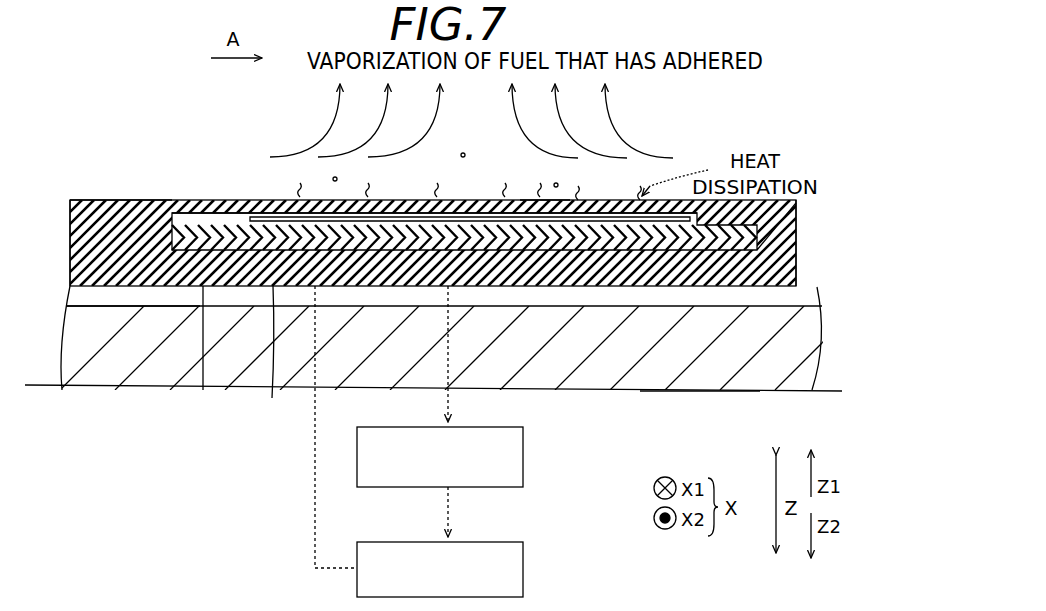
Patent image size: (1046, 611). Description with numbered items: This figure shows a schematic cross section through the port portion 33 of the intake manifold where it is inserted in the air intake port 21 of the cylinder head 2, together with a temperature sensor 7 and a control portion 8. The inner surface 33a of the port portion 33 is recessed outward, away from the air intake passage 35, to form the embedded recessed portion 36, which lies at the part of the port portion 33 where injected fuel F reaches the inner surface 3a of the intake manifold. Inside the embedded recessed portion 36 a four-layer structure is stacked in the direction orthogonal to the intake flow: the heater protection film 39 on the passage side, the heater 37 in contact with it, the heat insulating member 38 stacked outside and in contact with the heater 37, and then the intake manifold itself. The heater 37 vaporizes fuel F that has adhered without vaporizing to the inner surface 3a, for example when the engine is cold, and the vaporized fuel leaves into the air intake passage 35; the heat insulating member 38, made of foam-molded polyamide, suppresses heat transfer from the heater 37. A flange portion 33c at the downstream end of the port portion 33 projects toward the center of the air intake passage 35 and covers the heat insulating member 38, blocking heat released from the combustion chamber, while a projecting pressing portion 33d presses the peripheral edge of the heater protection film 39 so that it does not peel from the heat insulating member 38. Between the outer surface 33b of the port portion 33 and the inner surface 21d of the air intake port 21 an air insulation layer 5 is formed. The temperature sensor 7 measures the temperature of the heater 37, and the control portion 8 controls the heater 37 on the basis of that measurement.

The cylinder head 2 is at (635, 395).
The inner surface of the intake manifold 3a is at (80, 192).
The air insulation layer 5 is at (693, 393).
The temperature sensor 7 is at (523, 472).
The control portion 8 is at (523, 577).
The air intake port 21 is at (815, 248).
The inner surface of the air intake port 21d is at (96, 312).
The port portion 33 is at (125, 192).
The inner surface of the port portion 33a is at (157, 200).
The outer surface of the port portion 33b is at (543, 201).
The flange portion 33c is at (827, 176).
The projecting pressing portion 33d is at (202, 202).
The air intake passage 35 is at (762, 101).
The embedded recessed portion 36 is at (233, 202).
The heater 37 is at (266, 355).
The heat insulating member 38 is at (196, 351).
The heater protection film 39 is at (260, 200).
The fuel F is at (582, 197).